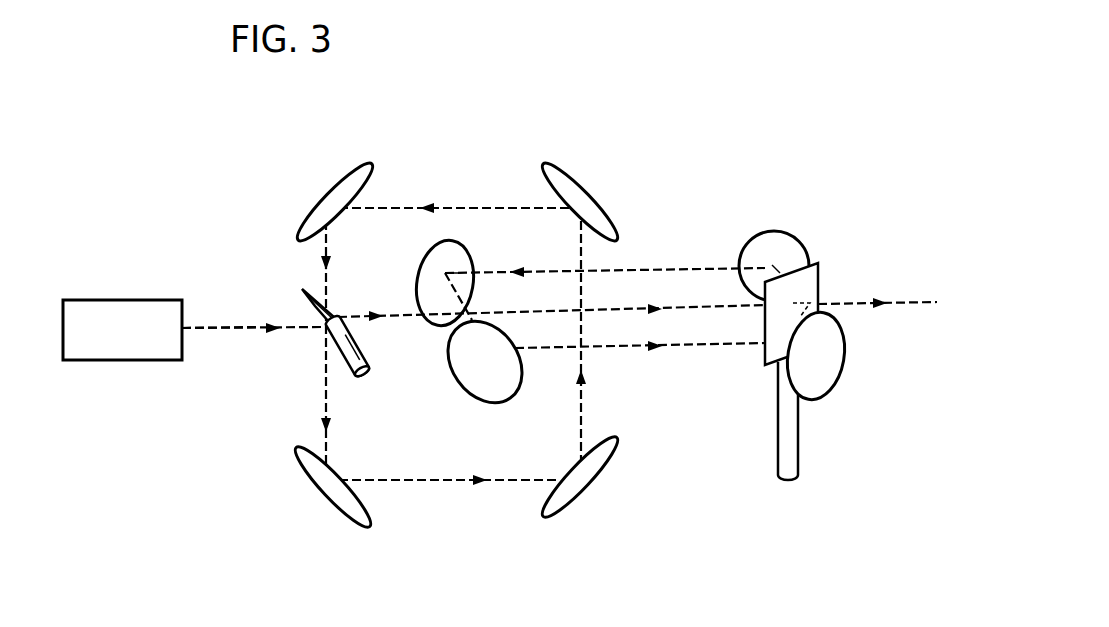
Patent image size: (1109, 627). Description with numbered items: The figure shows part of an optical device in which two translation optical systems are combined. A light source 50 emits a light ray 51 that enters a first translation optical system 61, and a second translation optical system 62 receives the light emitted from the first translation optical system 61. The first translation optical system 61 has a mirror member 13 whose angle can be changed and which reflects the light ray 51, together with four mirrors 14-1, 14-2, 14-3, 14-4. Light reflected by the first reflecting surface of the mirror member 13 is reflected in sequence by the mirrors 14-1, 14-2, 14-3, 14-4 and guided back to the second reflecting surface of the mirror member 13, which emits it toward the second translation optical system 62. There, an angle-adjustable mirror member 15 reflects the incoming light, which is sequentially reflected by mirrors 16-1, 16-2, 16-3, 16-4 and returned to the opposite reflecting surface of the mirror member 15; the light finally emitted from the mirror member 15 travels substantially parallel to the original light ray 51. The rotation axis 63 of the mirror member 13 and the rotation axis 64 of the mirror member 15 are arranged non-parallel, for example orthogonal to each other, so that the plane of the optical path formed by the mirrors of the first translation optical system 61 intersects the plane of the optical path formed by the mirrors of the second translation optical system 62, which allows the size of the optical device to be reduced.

The light source 50 is at (130, 300).
The light ray 51 is at (228, 326).
The mirror member 13 is at (300, 300).
The rotation axis 63 is at (372, 398).
The mirror 14-1 is at (333, 502).
The mirror 14-2 is at (582, 498).
The mirror 14-3 is at (573, 182).
The mirror 14-4 is at (333, 182).
The mirror 16-1 is at (783, 231).
The mirror 16-2 is at (418, 280).
The mirror 16-3 is at (470, 403).
The mirror 16-4 is at (843, 374).
The mirror member 15 is at (820, 285).
The rotation axis 64 is at (800, 454).
The first translation optical system 61 is at (500, 163).
The second translation optical system 62 is at (666, 230).